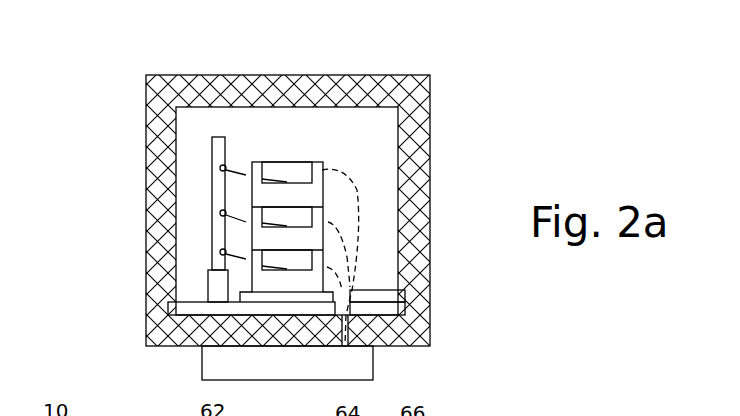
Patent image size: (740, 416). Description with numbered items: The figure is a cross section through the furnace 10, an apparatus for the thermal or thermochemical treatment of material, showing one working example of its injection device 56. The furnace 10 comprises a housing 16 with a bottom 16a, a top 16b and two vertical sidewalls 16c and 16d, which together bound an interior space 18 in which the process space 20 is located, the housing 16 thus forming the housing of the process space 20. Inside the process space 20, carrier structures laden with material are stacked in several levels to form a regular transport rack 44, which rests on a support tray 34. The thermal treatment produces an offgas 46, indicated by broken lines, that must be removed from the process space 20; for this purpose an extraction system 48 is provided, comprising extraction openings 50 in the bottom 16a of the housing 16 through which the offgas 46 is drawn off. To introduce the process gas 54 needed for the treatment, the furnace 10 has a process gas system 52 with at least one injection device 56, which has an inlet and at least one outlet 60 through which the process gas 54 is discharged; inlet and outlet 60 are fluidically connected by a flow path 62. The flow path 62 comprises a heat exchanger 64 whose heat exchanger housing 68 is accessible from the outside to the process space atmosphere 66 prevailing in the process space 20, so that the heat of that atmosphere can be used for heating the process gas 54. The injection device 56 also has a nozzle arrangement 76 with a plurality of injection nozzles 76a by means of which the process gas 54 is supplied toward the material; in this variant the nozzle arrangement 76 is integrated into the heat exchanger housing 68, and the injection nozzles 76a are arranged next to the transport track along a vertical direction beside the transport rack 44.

The furnace 10 is at (108, 22).
The housing 16 is at (419, 73).
The bottom 16a is at (386, 340).
The top 16b is at (212, 90).
The vertical sidewall 16c is at (146, 211).
The vertical sidewall 16d is at (413, 210).
The interior space 18 is at (389, 168).
The process space 20 is at (387, 185).
The support tray 34 is at (300, 305).
The transport rack 44 is at (260, 157).
The offgas 46 is at (343, 167).
The extraction system 48 is at (200, 358).
The extraction opening 50 is at (349, 293).
The process gas system 52 is at (197, 287).
The process gas 54 is at (220, 165).
The injection device 56 is at (214, 117).
The outlet 60 is at (167, 217).
The flow path 62 is at (199, 252).
The heat exchanger 64 is at (217, 156).
The process space atmosphere 66 is at (321, 122).
The heat exchanger housing 68 is at (252, 160).
The nozzle arrangement 76 is at (212, 185).
The injection nozzle 76a is at (123, 188).